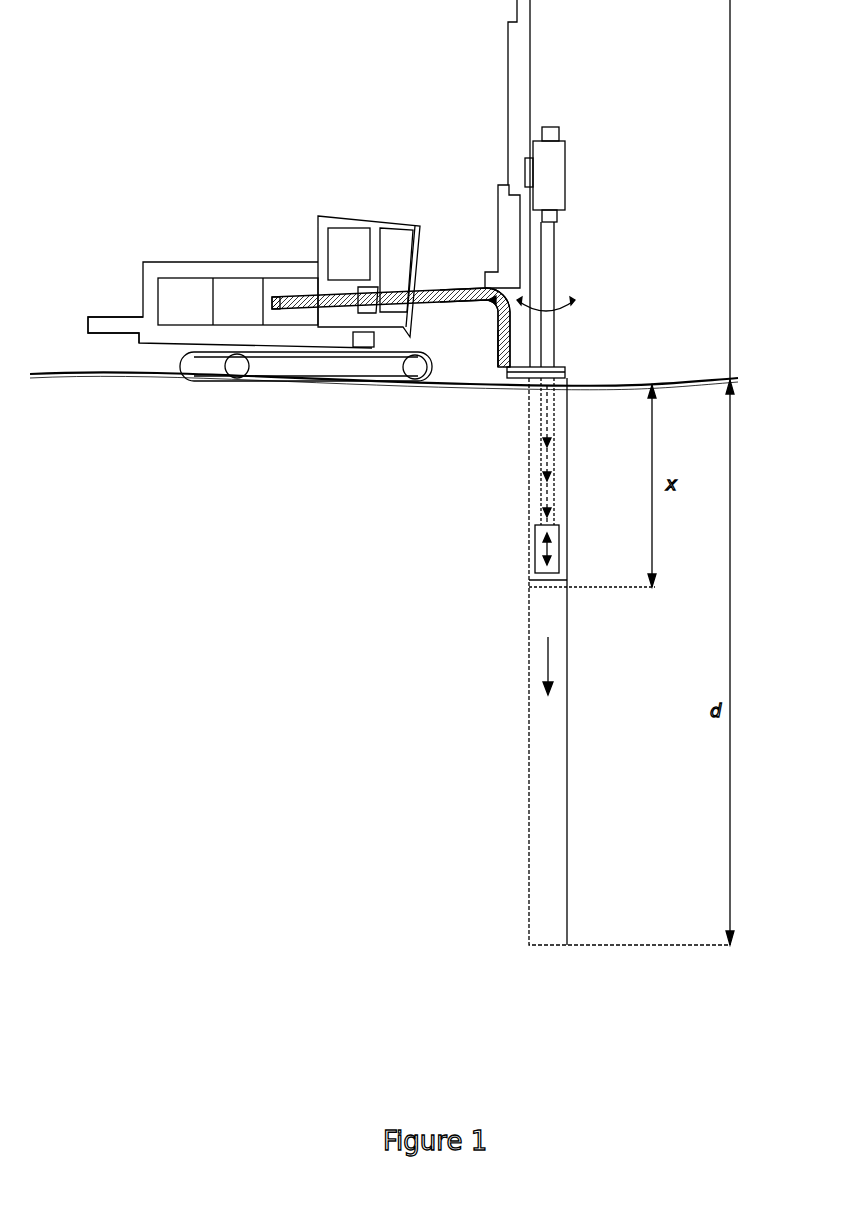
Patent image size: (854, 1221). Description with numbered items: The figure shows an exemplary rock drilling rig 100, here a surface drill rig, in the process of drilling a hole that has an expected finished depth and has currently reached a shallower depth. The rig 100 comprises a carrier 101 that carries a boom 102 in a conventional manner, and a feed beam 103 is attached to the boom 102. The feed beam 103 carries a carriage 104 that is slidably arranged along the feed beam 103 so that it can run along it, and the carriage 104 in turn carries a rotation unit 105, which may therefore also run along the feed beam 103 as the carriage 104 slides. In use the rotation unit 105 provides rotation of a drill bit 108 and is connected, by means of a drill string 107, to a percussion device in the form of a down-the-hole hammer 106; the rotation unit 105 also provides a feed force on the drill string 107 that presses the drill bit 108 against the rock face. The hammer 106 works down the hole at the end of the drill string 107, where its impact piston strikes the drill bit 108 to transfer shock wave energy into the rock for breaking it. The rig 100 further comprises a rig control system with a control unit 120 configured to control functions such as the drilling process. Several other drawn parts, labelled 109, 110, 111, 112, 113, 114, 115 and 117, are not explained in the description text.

The rock drilling rig 100 is at (288, 158).
The carrier 101 is at (205, 262).
The boom 102 is at (445, 280).
The feed beam 103 is at (515, 90).
The carriage 104 is at (507, 213).
The rotation unit 105 is at (566, 180).
The down-the-hole hammer 106 is at (560, 563).
The drill string 107 is at (548, 352).
The drill bit 108 is at (533, 578).
The excavator arm 109 is at (283, 287).
The ground plate 110 is at (568, 368).
The counterweight 111 is at (190, 322).
The rod below ground 112 is at (530, 418).
The hydraulic hose 113 is at (472, 307).
The operator cab 114 is at (353, 240).
The top cap 115 is at (560, 133).
The direction of advance 117 is at (546, 667).
The control unit 120 is at (372, 347).